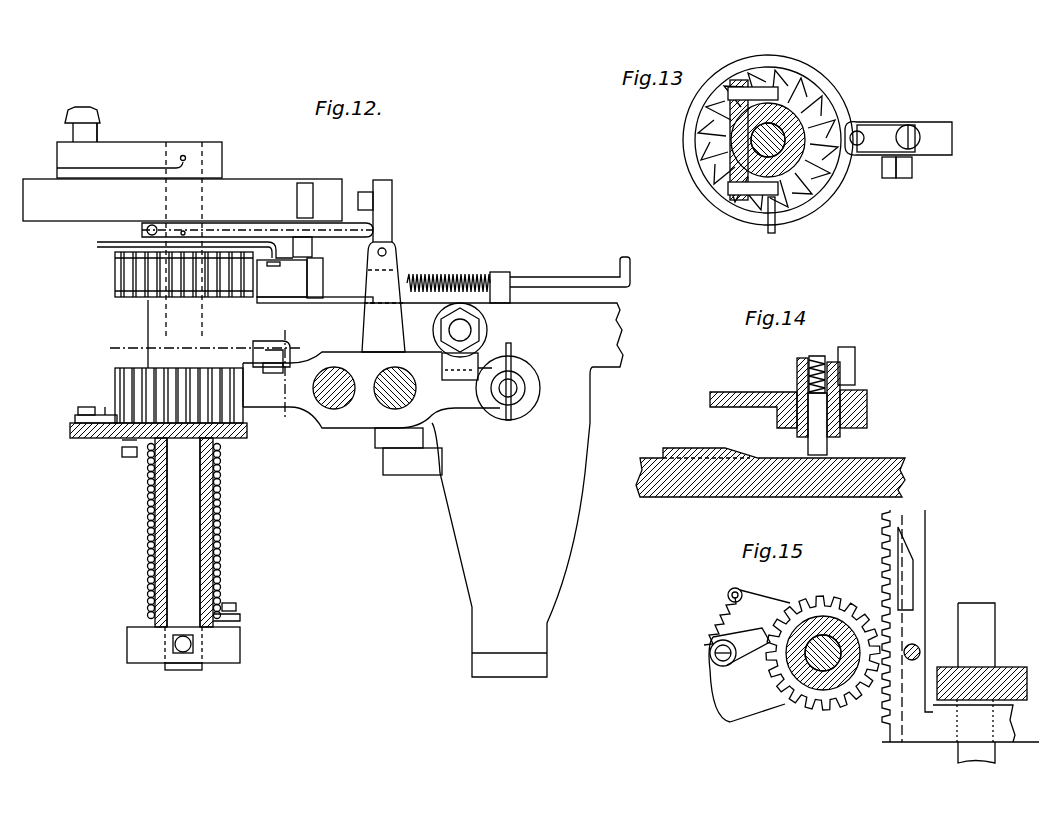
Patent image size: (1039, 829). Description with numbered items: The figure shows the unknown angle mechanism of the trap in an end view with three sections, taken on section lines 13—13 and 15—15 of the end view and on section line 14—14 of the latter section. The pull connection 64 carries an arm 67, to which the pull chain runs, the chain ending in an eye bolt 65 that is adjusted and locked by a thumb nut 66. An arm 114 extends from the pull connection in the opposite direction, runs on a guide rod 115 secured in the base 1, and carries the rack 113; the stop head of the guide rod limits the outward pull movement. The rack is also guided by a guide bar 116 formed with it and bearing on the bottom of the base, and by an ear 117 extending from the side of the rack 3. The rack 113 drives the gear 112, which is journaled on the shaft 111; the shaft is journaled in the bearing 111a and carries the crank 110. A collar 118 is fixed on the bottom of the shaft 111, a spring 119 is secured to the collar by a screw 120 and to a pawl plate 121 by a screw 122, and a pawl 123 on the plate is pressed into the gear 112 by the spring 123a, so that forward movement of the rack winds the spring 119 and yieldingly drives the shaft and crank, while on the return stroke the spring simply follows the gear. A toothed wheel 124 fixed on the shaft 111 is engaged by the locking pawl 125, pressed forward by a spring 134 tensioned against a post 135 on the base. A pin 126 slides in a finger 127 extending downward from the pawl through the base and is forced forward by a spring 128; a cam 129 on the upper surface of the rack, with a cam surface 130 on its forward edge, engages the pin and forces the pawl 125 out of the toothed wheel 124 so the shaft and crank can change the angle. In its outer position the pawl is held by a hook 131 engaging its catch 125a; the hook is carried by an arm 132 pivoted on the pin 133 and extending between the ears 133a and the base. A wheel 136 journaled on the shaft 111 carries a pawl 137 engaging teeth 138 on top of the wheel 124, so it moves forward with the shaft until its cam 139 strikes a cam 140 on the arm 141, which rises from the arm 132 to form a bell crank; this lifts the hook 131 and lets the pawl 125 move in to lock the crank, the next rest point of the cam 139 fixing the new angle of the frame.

In FIG. 12, the frame 1 is at (562, 305).
In FIG. 14, the frame 1 is at (866, 394).
In FIG. 12, the rack 3 is at (511, 550).
In FIG. 12, the section line 13— 13 is at (97, 243).
In FIG. 14, the section line 14— 14 is at (899, 490).
In FIG. 15, the section line 14— 14 is at (897, 765).
In FIG. 12, the section line 15— 15 is at (308, 349).
In FIG. 12, the pull connection 64 is at (371, 390).
In FIG. 12, the eye bolt 65 is at (526, 388).
In FIG. 12, the thumb nut 66 is at (514, 360).
In FIG. 12, the arm 67 is at (460, 356).
In FIG. 12, the crank 110 is at (125, 152).
In FIG. 12, the shaft 111 is at (183, 473).
In FIG. 13, the shaft 111 is at (750, 148).
In FIG. 12, the bearing 111a is at (148, 317).
In FIG. 15, the bearing 111a is at (808, 625).
In FIG. 12, the gear 112 is at (115, 378).
In FIG. 15, the gear 112 is at (825, 635).
In FIG. 14, the rack 113 is at (720, 490).
In FIG. 15, the rack 113 is at (888, 530).
In FIG. 12, the arm 114 is at (286, 372).
In FIG. 15, the arm 114 is at (963, 748).
In FIG. 12, the guide rod 115 is at (333, 372).
In FIG. 15, the guide rod 115 is at (976, 606).
In FIG. 12, the guide bar 116 is at (378, 437).
In FIG. 12, the ear 117 is at (410, 478).
In FIG. 12, the collar 118 is at (183, 648).
In FIG. 12, the spring 119 is at (223, 572).
In FIG. 12, the screw 120 is at (238, 609).
In FIG. 12, the pawl plate 121 is at (96, 440).
In FIG. 15, the pawl plate 121 is at (749, 714).
In FIG. 12, the screw 122 is at (126, 460).
In FIG. 12, the pawl 123 is at (91, 404).
In FIG. 15, the pawl 123 is at (755, 658).
In FIG. 15, the spring 123a is at (712, 612).
In FIG. 12, the toothed wheel 124 is at (115, 278).
In FIG. 13, the toothed wheel 124 is at (855, 123).
In FIG. 12, the locking pawl 125 is at (315, 281).
In FIG. 13, the locking pawl 125 is at (930, 128).
In FIG. 14, the locking pawl 125 is at (797, 368).
In FIG. 12, the catch 125a is at (312, 284).
In FIG. 13, the catch 125a is at (906, 170).
In FIG. 14, the catch 125a is at (855, 356).
In FIG. 12, the pin 126 is at (268, 373).
In FIG. 14, the pin 126 is at (827, 450).
In FIG. 15, the pin 126 is at (918, 650).
In FIG. 14, the finger 127 is at (867, 402).
In FIG. 14, the spring 128 is at (806, 380).
In FIG. 12, the cam 129 is at (262, 360).
In FIG. 14, the cam 129 is at (712, 456).
In FIG. 15, the cam 129 is at (905, 576).
In FIG. 15, the cam surface 130 is at (914, 538).
In FIG. 12, the hook 131 is at (300, 248).
In FIG. 13, the hook 131 is at (884, 170).
In FIG. 12, the arm 132 is at (385, 240).
In FIG. 12, the pin 133 is at (390, 252).
In FIG. 12, the ears 133a is at (408, 318).
In FIG. 12, the spring 134 is at (448, 283).
In FIG. 12, the post 135 is at (500, 278).
In FIG. 12, the wheel 136 is at (182, 241).
In FIG. 13, the wheel 136 is at (730, 125).
In FIG. 13, the pawl 137 is at (768, 93).
In FIG. 13, the teeth 138 is at (828, 112).
In FIG. 12, the cam 139 is at (306, 185).
In FIG. 12, the cam 140 is at (392, 192).
In FIG. 12, the arm 141 is at (392, 207).